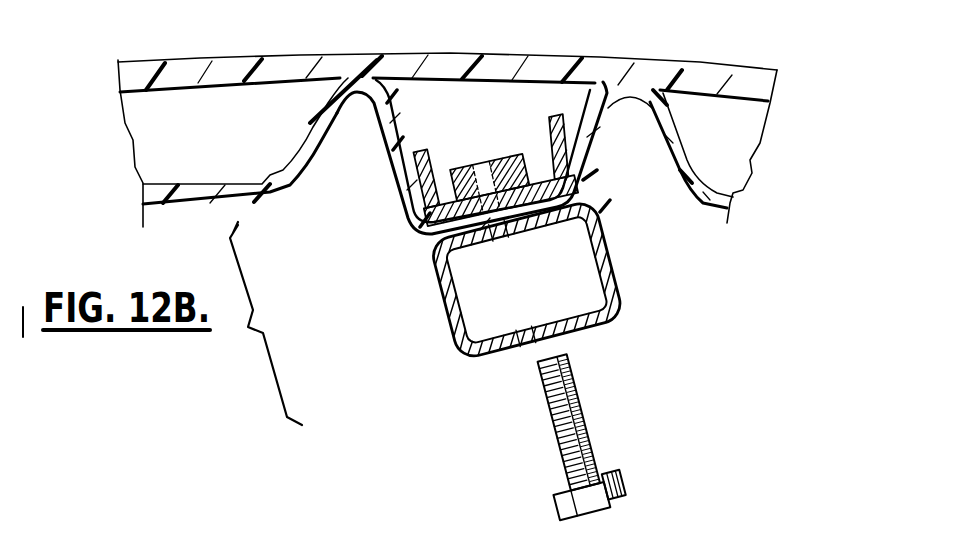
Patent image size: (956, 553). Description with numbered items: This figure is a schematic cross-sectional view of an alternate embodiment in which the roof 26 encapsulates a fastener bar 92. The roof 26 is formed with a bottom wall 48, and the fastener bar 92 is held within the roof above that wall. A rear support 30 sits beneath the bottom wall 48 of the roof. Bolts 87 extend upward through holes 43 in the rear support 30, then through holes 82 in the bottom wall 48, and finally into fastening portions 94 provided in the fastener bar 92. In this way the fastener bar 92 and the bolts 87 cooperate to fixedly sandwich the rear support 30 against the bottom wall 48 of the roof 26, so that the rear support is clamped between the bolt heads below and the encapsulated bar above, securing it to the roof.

The roof 26 is at (717, 71).
The bottom wall 48 is at (400, 170).
The fastener bar 92 is at (582, 137).
The fastening portions 94 is at (483, 165).
The rear support 30 is at (620, 297).
The holes 82 is at (508, 245).
The holes 43 is at (514, 238).
The bolts 87 is at (633, 490).